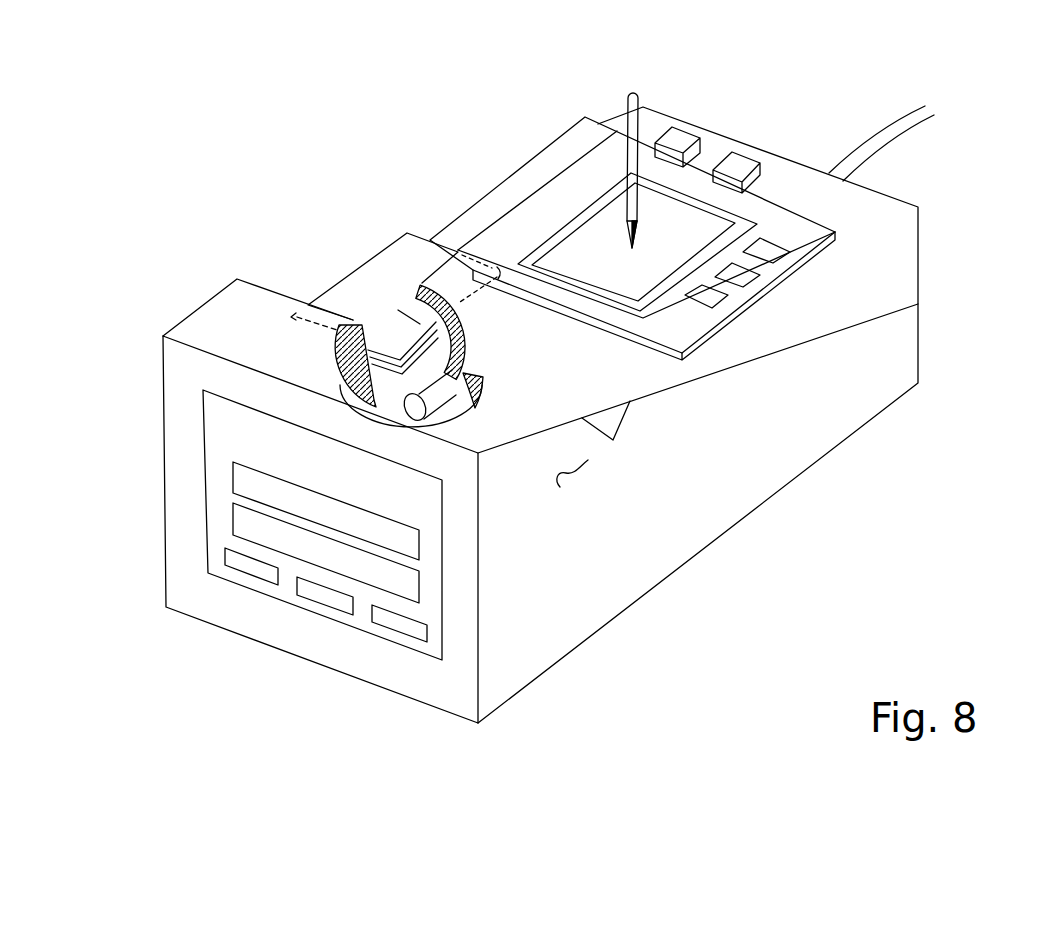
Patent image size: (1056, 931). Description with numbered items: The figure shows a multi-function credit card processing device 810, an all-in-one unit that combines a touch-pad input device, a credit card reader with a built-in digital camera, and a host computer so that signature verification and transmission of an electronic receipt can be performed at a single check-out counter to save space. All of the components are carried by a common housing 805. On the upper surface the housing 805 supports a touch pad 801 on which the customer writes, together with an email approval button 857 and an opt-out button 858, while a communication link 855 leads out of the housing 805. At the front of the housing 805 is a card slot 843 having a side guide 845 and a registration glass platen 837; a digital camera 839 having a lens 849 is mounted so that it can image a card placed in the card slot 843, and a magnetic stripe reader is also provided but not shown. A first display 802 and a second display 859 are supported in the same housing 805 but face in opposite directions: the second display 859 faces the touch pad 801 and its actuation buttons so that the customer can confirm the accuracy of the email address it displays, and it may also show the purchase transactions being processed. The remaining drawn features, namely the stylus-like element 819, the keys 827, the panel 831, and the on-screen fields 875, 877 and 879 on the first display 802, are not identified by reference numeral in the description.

The touch pad 801 is at (888, 196).
The first display 802 is at (434, 570).
The housing 805 is at (578, 477).
The multi-function credit card processing device 810 is at (187, 290).
The stylus 819 is at (635, 128).
The function keys 827 is at (710, 295).
The stylus holder panel 831 is at (365, 285).
The registration glass platen 837 is at (330, 357).
The digital camera 839 is at (440, 388).
The card slot 843 is at (403, 313).
The side guide 845 is at (462, 334).
The lens 849 is at (450, 362).
The communication link 855 is at (876, 150).
The email approval button 857 is at (678, 138).
The opt-out button 858 is at (737, 162).
The second display 859 is at (630, 401).
The soft key 875 is at (242, 575).
The soft key 877 is at (328, 610).
The soft key 879 is at (405, 637).